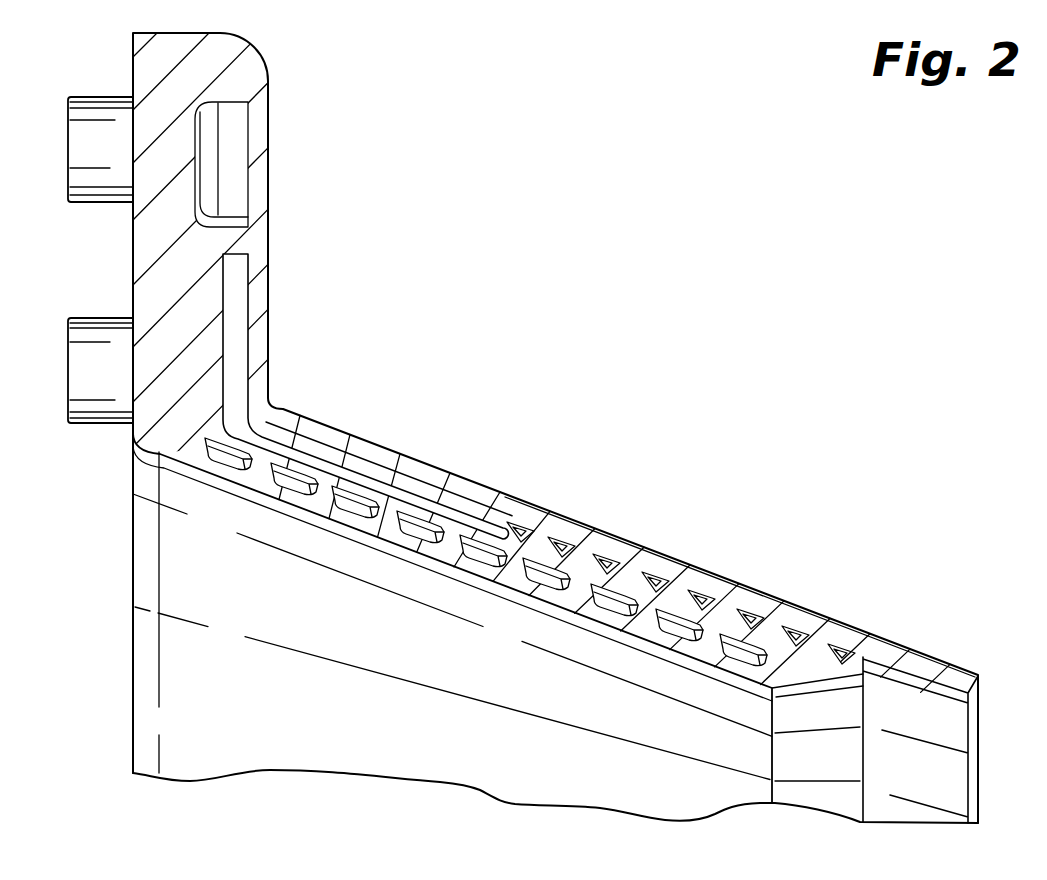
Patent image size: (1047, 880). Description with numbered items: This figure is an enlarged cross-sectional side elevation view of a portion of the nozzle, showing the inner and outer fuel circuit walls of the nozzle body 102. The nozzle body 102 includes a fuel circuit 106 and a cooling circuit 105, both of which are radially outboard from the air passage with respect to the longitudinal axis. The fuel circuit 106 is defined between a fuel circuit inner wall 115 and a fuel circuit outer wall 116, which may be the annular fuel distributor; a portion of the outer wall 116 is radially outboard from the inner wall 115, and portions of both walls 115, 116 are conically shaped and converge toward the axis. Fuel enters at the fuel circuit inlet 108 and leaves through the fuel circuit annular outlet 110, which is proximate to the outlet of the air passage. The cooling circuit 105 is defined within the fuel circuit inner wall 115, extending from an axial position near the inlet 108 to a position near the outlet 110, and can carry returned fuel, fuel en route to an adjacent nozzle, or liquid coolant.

The nozzle body 102 is at (737, 262).
The cooling circuit 105 is at (213, 468).
The fuel circuit 106 is at (565, 535).
The fuel circuit inlet 108 is at (228, 347).
The fuel circuit annular outlet 110 is at (868, 673).
The fuel circuit inner wall 115 is at (247, 477).
The fuel circuit outer wall 116 is at (442, 469).